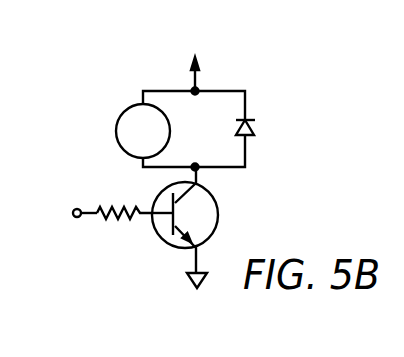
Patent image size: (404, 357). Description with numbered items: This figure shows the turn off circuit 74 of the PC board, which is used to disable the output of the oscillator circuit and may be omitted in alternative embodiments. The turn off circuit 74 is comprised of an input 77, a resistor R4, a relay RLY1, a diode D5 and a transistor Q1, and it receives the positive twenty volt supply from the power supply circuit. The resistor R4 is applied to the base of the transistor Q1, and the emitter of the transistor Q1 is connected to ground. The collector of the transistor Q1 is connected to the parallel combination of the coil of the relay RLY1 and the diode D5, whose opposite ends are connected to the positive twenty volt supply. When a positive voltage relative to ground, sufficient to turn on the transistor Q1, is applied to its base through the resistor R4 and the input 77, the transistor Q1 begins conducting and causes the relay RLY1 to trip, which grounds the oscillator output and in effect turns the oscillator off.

The turn off circuit 74 is at (213, 159).
The input 77 is at (79, 217).
The relay RLY1 is at (105, 131).
The diode D5 is at (255, 120).
The transistor Q1 is at (218, 213).
The resistor R4 is at (116, 200).